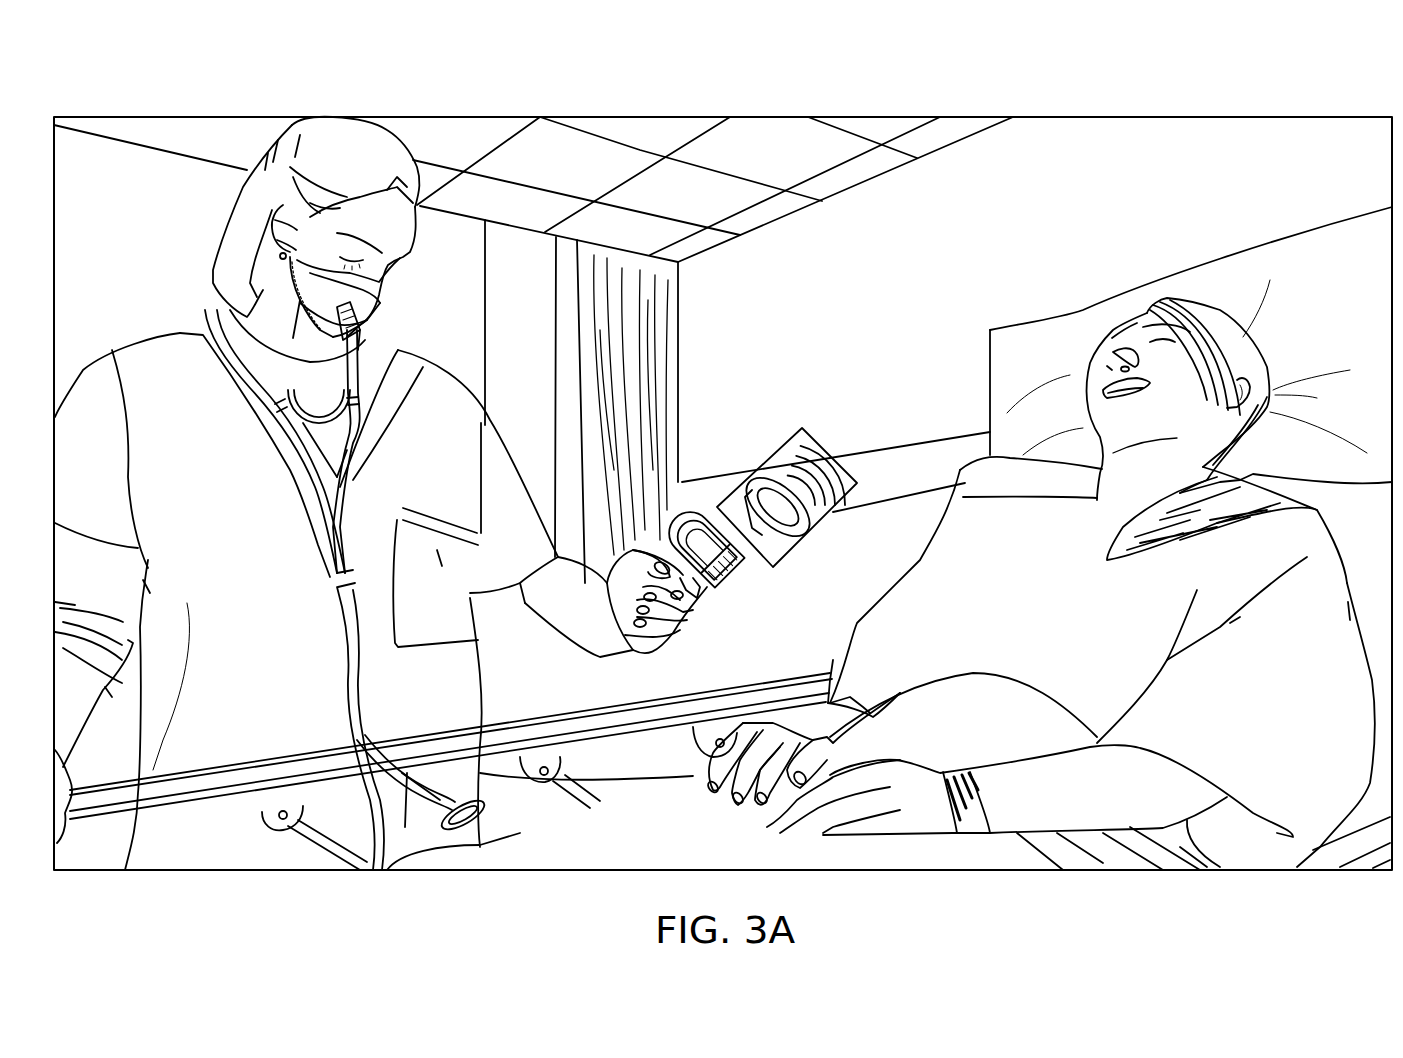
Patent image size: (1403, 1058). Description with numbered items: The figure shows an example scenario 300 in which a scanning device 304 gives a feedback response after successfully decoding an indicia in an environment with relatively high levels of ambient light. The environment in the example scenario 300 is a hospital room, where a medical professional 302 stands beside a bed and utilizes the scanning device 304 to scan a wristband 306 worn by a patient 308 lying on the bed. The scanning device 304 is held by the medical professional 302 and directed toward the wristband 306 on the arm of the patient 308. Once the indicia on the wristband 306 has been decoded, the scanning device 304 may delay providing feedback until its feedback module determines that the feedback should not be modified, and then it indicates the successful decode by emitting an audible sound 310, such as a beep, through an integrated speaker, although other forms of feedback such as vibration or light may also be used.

The example scenario 300 is at (1312, 95).
The medical professional 302 is at (413, 353).
The scanning device 304 is at (698, 522).
The wristband 306 is at (960, 774).
The patient 308 is at (1040, 582).
The audible sound 310 is at (796, 432).